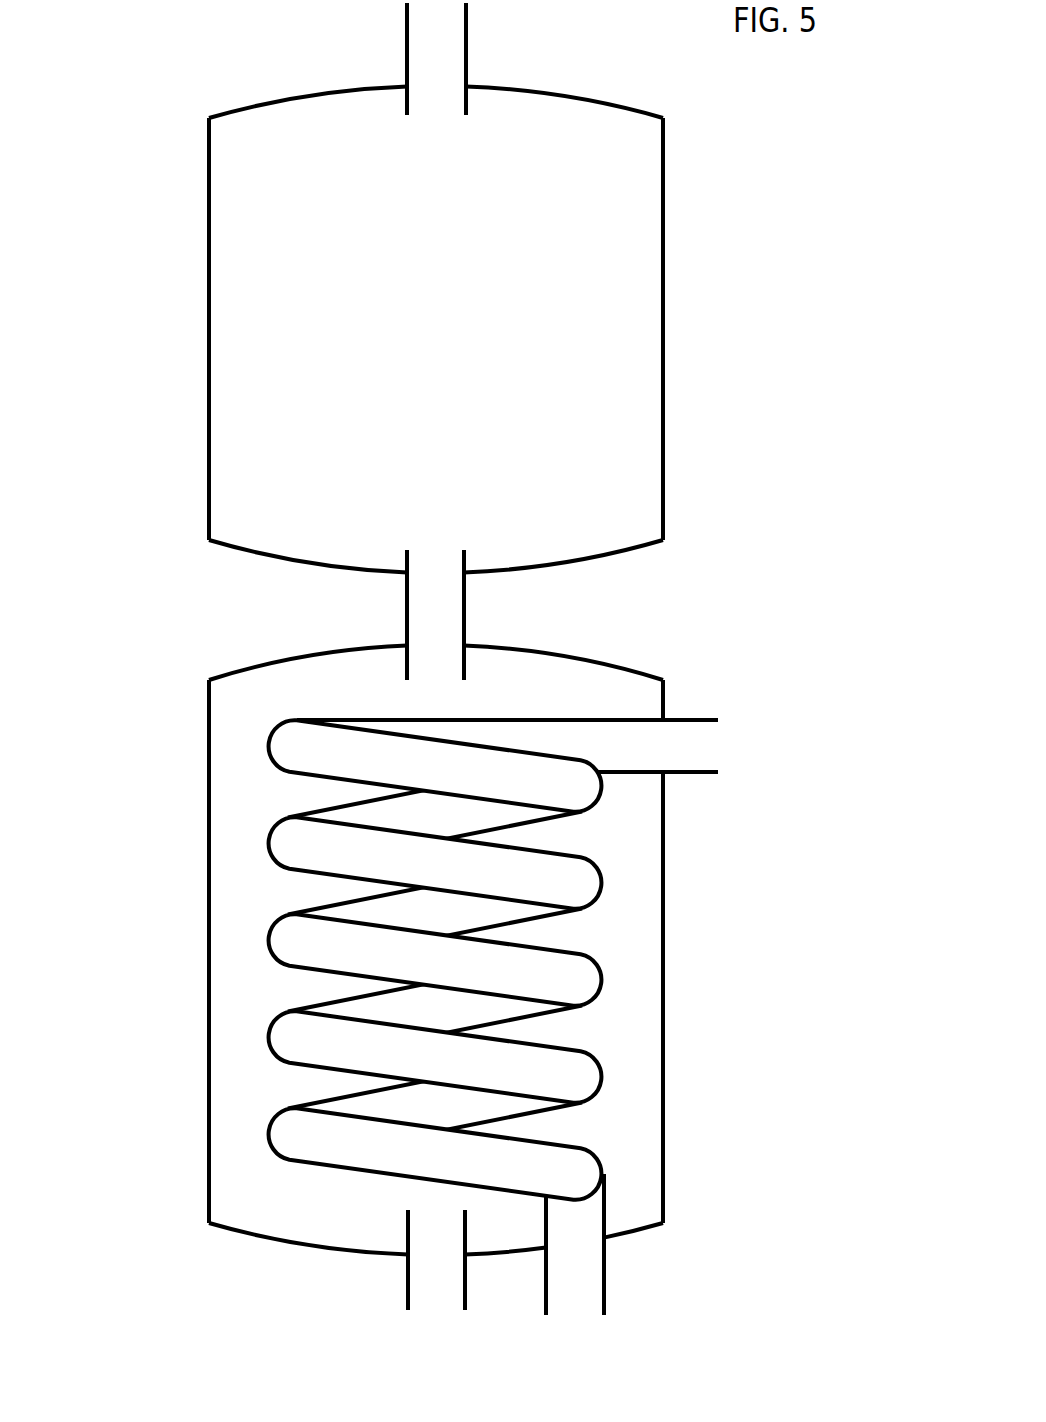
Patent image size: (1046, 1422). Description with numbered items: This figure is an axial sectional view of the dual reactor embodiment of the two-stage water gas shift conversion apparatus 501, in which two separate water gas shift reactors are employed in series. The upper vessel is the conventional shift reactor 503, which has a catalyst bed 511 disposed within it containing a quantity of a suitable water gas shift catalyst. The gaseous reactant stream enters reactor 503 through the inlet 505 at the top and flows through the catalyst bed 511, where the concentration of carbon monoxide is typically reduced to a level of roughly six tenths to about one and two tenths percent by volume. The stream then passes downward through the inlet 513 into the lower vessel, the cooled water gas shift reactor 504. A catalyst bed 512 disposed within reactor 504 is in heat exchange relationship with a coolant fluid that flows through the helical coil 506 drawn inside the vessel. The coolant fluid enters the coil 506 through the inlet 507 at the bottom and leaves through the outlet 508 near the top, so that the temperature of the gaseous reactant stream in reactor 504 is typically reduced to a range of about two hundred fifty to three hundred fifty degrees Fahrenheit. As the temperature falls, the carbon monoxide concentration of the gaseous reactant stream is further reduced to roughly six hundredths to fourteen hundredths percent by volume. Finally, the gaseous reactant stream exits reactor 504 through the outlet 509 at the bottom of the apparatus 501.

The two-stage water gas shift conversion apparatus 501 is at (700, 197).
The conventional shift reactor 503 is at (207, 332).
The cooled water gas shift reactor 504 is at (208, 1035).
The inlet 505 is at (417, 28).
The coil 506 is at (603, 983).
The inlet 507 is at (590, 1297).
The outlet 508 is at (697, 747).
The outlet 509 is at (418, 1285).
The catalyst bed 511 is at (637, 452).
The catalyst bed 512 is at (650, 908).
The inlet 513 is at (450, 620).